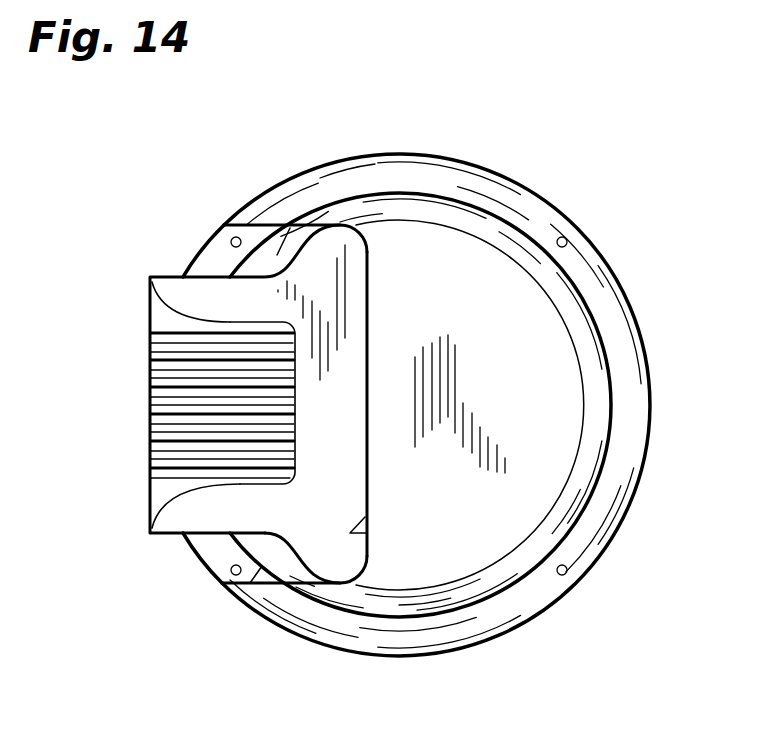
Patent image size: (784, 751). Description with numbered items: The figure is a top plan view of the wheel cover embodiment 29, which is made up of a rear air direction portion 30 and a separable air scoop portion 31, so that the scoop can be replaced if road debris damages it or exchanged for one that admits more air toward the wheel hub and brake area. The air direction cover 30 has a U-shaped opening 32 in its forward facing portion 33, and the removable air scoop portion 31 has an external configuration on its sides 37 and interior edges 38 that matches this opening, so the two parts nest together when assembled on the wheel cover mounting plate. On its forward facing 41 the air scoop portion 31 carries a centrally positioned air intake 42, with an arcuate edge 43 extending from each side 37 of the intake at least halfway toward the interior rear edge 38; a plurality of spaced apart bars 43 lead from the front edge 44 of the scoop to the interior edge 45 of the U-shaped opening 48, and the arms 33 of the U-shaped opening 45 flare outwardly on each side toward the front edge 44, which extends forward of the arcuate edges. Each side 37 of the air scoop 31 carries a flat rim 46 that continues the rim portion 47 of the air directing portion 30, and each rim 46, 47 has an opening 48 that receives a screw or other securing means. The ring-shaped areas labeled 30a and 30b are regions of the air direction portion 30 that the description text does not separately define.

The embodiment 29 is at (527, 137).
The rear air direction portion 30 is at (515, 381).
The outer ring portion 30a is at (614, 412).
The inner ring portion 30b is at (580, 324).
The separable air scoop portion 31 is at (350, 420).
The U-shaped opening 32 is at (316, 212).
The forward facing portion 33 is at (390, 496).
The sides 37 is at (172, 275).
The interior edges 38 is at (277, 255).
The forward facing 41 is at (120, 399).
The air intake 42 is at (274, 503).
The arcuate edge 43 is at (231, 321).
The front edge 44 is at (150, 438).
The interior edge 45 is at (298, 420).
The flat rim 46 is at (208, 258).
The rim portion 47 is at (423, 165).
The opening 48 is at (234, 237).